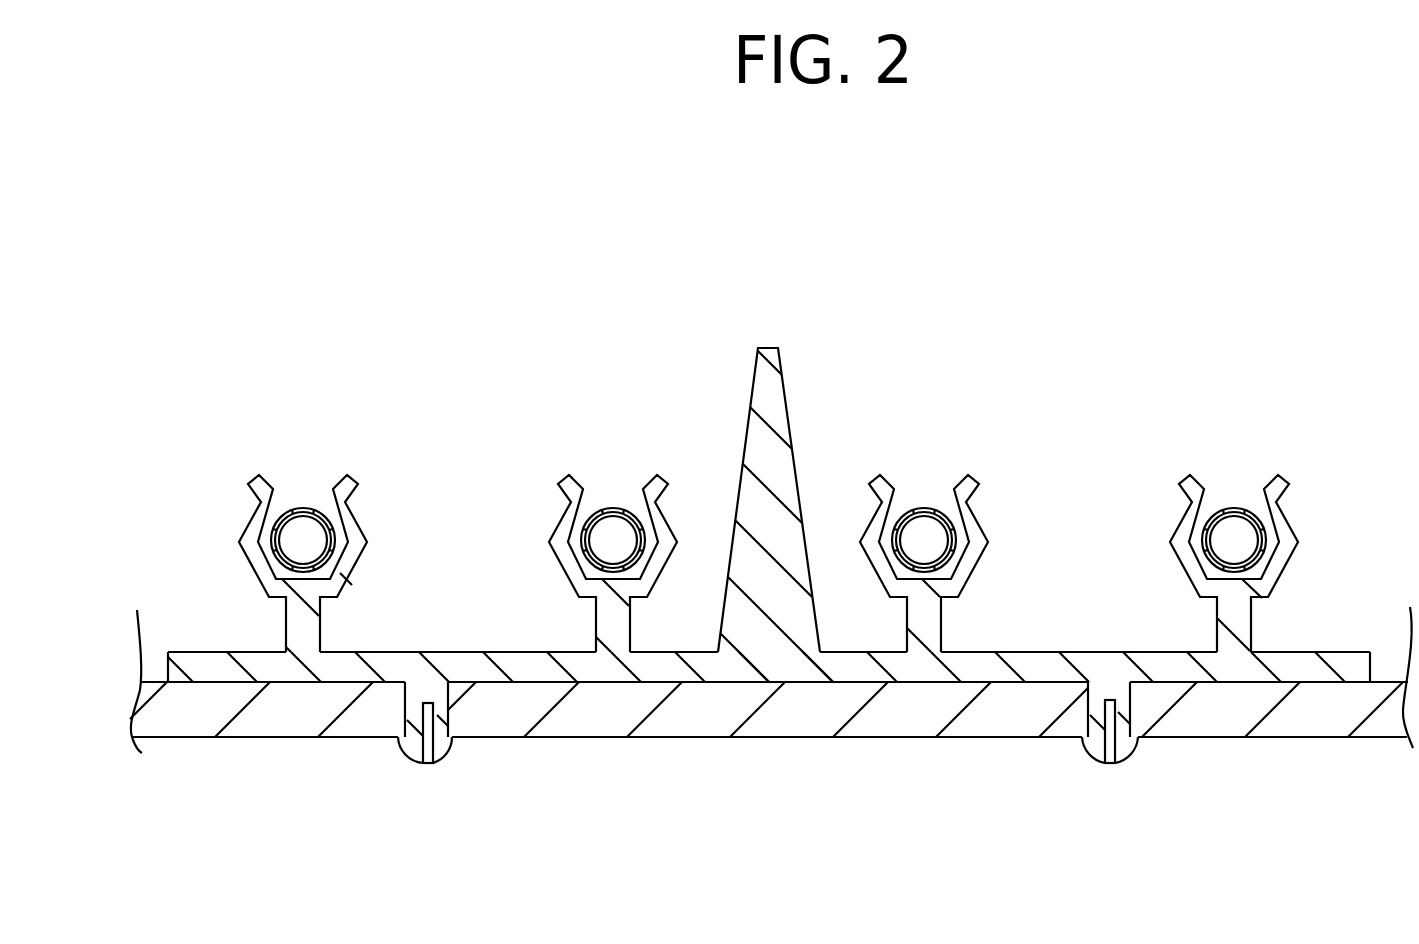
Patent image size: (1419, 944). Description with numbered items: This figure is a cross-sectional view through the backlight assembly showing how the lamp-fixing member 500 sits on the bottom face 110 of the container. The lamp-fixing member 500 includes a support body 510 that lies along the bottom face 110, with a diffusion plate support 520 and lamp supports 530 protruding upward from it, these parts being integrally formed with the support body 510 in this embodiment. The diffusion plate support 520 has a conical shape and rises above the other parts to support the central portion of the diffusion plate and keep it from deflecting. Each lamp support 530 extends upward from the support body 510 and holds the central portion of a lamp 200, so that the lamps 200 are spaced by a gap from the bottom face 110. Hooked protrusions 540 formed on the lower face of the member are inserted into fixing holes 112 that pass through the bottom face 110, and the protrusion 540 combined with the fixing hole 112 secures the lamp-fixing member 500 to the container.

The bottom face 110 is at (213, 700).
The fixing hole 112 is at (450, 722).
The lamp 200 is at (1230, 506).
The lamp-fixing member 500 is at (769, 624).
The support body 510 is at (1250, 668).
The diffusion plate support 520 is at (779, 609).
The lamp support 530 is at (978, 587).
The protrusion 540 is at (1131, 765).